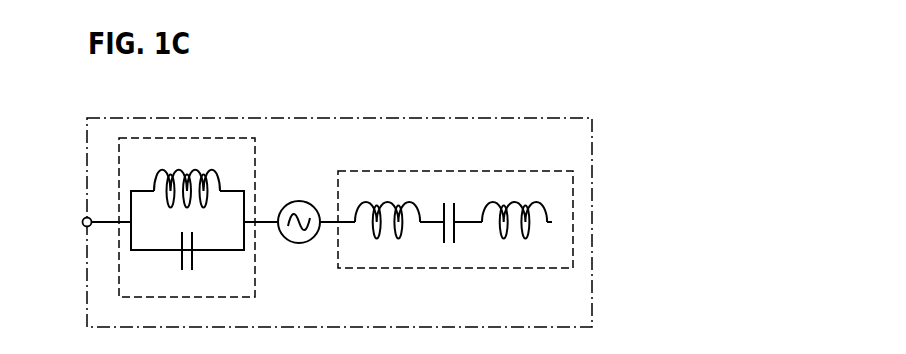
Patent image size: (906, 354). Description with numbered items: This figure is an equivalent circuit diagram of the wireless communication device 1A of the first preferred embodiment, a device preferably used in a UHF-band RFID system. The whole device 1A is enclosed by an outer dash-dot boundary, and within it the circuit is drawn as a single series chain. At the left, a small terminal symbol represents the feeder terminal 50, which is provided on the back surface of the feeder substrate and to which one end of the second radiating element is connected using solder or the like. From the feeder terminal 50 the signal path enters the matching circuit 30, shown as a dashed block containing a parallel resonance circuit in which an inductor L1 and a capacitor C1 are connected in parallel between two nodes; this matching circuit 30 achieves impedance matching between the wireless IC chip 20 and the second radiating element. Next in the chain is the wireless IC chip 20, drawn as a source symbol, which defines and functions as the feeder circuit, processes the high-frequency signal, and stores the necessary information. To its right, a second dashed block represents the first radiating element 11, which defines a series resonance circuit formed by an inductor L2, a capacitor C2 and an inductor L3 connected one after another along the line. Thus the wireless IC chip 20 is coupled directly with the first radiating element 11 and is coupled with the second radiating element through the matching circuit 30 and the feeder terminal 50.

The wireless communication device 1A is at (559, 113).
The first radiating element 11 is at (385, 170).
The wireless IC chip 20 is at (298, 201).
The matching circuit 30 is at (210, 137).
The feeder terminal 50 is at (82, 228).
The inductor L1 is at (187, 176).
The capacitor C1 is at (186, 266).
The inductor L2 is at (387, 208).
The capacitor C2 is at (449, 210).
The inductor L3 is at (514, 208).